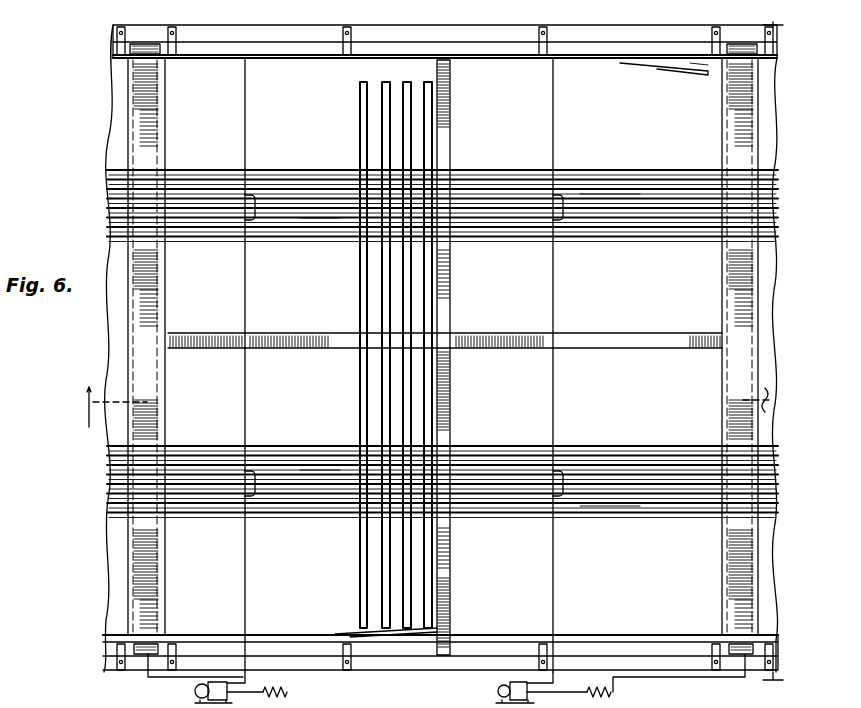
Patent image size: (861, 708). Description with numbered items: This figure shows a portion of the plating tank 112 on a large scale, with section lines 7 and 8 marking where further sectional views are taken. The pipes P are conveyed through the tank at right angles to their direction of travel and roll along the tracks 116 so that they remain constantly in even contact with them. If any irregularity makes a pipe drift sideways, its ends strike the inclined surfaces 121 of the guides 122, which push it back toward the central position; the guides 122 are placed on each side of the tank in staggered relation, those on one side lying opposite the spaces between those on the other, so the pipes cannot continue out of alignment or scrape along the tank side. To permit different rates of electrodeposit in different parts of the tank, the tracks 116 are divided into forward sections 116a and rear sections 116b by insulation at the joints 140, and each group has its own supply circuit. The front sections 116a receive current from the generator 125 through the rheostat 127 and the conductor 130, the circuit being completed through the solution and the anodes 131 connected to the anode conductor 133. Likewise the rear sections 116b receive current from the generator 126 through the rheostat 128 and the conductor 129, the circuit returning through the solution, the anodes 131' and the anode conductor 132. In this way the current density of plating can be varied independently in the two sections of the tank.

The tank 112 is at (112, 601).
The tracks 116 is at (327, 203).
The forward track sections 116a is at (207, 205).
The rear track sections 116b is at (660, 220).
The anodes 131 is at (301, 345).
The anodes 131' is at (612, 348).
The anode conductor 132 is at (553, 602).
The anode conductor 133 is at (246, 587).
The insulated joints 140 is at (445, 212).
The pipes P is at (385, 327).
The inclined surfaces 121 is at (672, 72).
The guides 122 is at (698, 70).
The generator 125 is at (197, 691).
The generator 126 is at (498, 691).
The rheostat 127 is at (291, 692).
The rheostat 128 is at (613, 690).
The conductor 129 is at (722, 672).
The conductor 130 is at (162, 672).
The section line 7 is at (428, 407).
The section line 8 is at (773, 353).